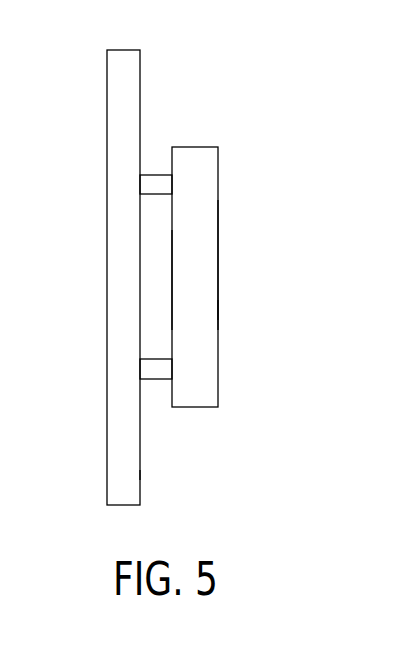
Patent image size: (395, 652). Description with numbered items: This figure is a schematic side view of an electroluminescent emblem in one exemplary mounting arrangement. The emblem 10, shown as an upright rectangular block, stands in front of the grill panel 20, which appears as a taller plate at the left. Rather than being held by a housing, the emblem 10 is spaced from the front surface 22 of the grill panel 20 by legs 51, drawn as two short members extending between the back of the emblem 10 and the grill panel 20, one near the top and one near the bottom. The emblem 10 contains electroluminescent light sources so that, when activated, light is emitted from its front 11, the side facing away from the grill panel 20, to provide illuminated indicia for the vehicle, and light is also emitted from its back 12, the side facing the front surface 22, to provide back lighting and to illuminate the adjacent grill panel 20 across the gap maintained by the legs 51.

The grill panel 20 is at (126, 50).
The front surface 22 is at (140, 472).
The emblem 10 is at (196, 147).
The front 11 is at (219, 281).
The back 12 is at (171, 282).
The legs 51 is at (153, 175).